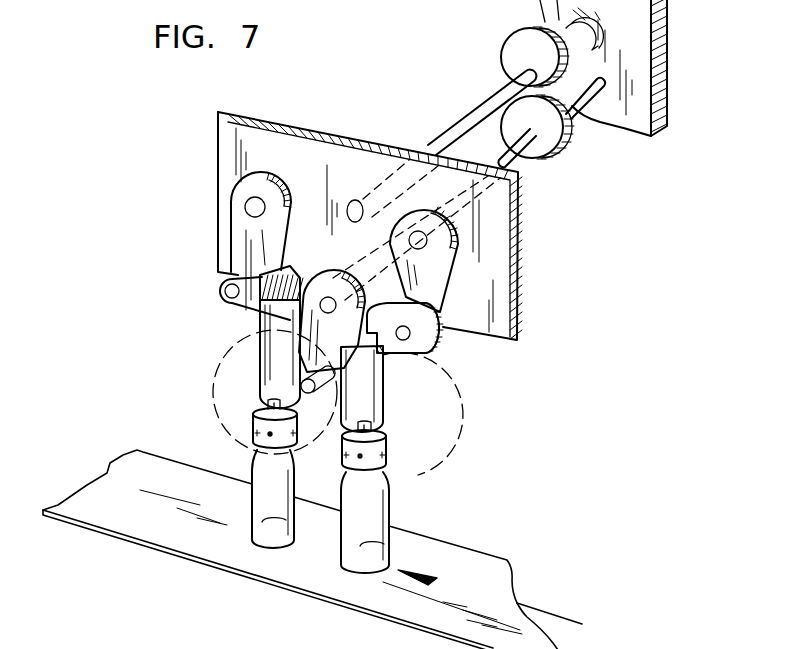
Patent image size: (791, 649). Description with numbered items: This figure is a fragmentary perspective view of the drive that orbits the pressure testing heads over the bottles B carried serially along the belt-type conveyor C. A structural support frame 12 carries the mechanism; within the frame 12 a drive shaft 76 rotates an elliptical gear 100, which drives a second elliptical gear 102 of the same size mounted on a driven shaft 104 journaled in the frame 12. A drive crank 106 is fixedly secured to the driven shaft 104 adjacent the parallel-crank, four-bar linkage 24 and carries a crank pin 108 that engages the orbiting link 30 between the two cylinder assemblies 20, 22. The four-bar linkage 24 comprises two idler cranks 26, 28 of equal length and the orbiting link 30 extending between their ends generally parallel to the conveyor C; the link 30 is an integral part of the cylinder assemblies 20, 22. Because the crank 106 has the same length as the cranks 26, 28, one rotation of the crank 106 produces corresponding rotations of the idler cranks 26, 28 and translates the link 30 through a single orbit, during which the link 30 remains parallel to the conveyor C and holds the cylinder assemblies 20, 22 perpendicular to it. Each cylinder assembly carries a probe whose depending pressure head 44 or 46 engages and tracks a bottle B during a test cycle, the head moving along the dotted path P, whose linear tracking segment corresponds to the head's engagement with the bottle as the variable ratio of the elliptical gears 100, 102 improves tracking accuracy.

The structural support frame 12 is at (667, 90).
The cylinder assembly 20 is at (380, 417).
The cylinder assembly 22 is at (263, 353).
The parallel-crank four-bar linkage 24 is at (452, 336).
The idler crank 26 is at (434, 267).
The idler crank 28 is at (240, 238).
The orbiting link 30 is at (227, 300).
The pressure head 44 is at (363, 458).
The pressure head 46 is at (268, 434).
The drive shaft 76 is at (447, 128).
The elliptical gear 100 is at (497, 55).
The elliptical gear 102 is at (565, 133).
The driven shaft 104 is at (519, 157).
The drive crank 106 is at (323, 277).
The crank pin 108 is at (300, 384).
The bottle B is at (252, 498).
The dotted path P is at (214, 370).
The conveyor C is at (462, 567).